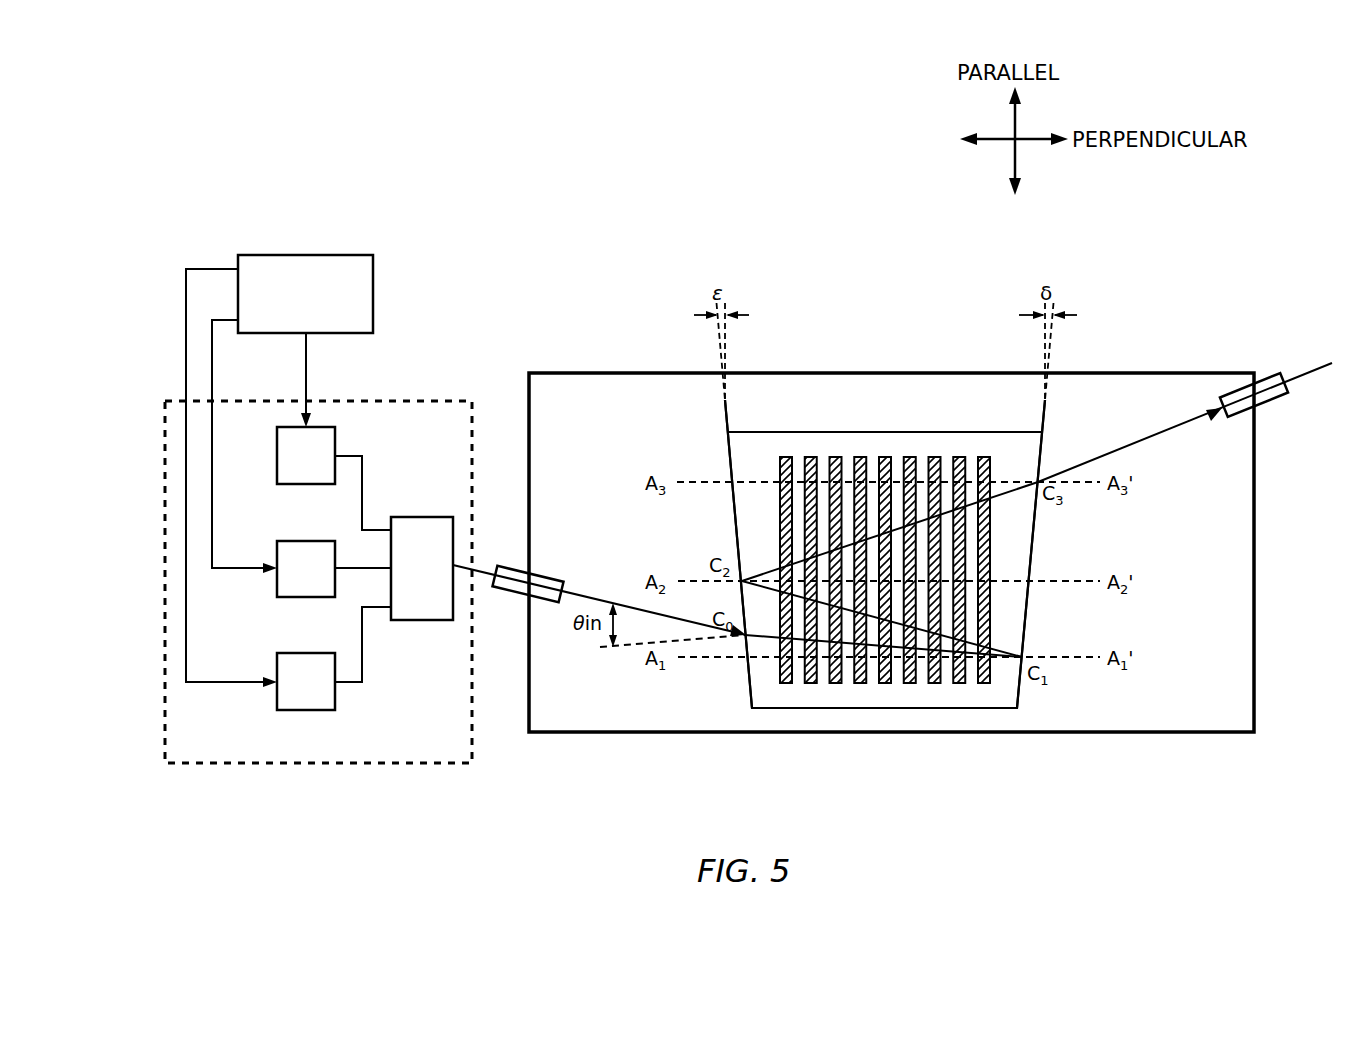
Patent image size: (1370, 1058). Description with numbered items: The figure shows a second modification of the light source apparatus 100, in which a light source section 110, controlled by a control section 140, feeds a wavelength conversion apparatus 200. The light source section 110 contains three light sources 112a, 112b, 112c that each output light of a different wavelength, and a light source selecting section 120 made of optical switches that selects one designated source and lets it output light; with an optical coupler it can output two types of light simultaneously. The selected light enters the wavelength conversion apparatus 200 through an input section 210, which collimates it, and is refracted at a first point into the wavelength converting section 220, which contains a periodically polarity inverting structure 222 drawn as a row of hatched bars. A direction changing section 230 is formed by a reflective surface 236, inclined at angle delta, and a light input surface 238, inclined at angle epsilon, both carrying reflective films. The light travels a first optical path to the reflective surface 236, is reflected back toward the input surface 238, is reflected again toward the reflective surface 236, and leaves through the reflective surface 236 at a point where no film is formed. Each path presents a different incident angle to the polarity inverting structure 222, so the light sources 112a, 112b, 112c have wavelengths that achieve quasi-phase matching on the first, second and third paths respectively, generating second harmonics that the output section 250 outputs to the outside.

The light source apparatus 100 is at (767, 836).
The light source section 110 is at (321, 764).
The light source 112a is at (305, 484).
The light source 112b is at (305, 597).
The light source 112c is at (305, 710).
The light source selecting section 120 is at (422, 516).
The control section 140 is at (307, 254).
The wavelength conversion apparatus 200 is at (1153, 373).
The input section 210 is at (511, 594).
The wavelength converting section 220 is at (950, 709).
The polarity inverting structure 222 is at (995, 686).
The direction changing section 230 is at (977, 313).
The reflective surface 236 is at (1035, 467).
The light input surface 238 is at (735, 467).
The output section 250 is at (1273, 404).